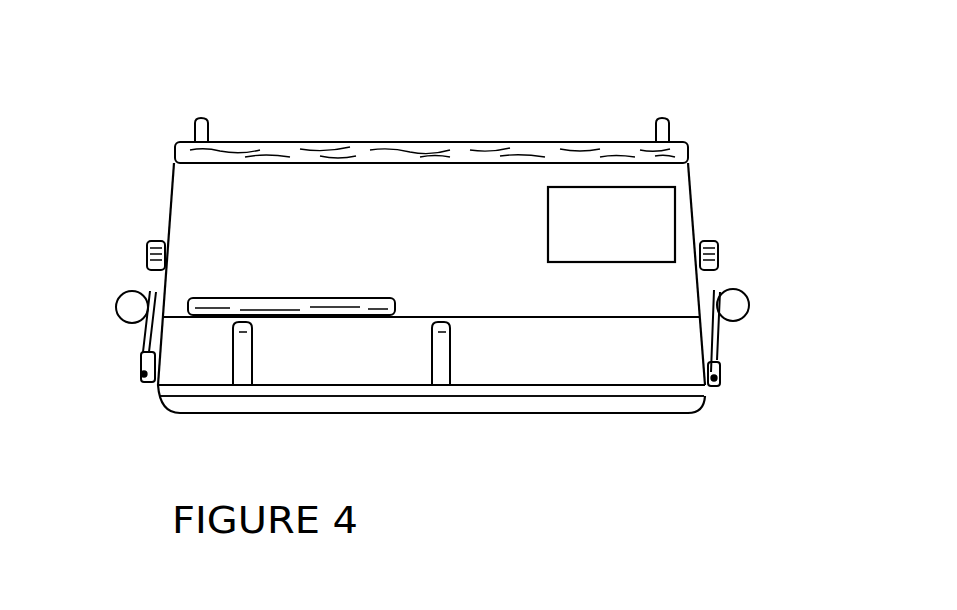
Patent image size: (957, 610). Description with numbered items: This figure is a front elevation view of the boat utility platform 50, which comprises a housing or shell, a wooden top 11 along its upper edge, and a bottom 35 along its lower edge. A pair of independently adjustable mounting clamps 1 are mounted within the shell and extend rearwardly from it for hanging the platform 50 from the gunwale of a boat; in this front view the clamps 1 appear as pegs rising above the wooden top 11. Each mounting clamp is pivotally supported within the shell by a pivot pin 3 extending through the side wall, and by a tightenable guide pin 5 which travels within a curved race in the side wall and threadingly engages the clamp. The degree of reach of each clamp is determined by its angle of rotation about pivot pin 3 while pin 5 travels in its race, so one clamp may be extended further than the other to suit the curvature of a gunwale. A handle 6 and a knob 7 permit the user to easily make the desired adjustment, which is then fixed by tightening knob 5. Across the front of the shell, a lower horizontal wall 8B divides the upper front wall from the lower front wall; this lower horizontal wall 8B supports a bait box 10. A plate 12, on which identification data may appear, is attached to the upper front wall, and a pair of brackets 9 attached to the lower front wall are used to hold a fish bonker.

The mounting clamp 1 is at (195, 122).
The pivot pin 3 is at (713, 382).
The guide pin 5 is at (718, 245).
The handle 6 is at (718, 352).
The knob 7 is at (728, 293).
The lower horizontal wall 8B is at (481, 317).
The bracket 9 is at (242, 343).
The bait box 10 is at (237, 308).
The wooden top 11 is at (632, 145).
The plate 12 is at (620, 239).
The bottom 35 is at (435, 413).
The boat utility platform 50 is at (418, 112).